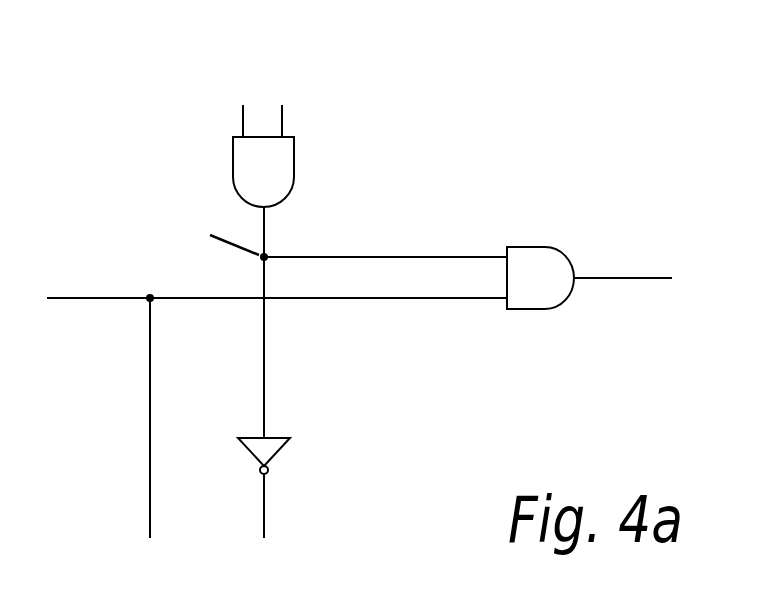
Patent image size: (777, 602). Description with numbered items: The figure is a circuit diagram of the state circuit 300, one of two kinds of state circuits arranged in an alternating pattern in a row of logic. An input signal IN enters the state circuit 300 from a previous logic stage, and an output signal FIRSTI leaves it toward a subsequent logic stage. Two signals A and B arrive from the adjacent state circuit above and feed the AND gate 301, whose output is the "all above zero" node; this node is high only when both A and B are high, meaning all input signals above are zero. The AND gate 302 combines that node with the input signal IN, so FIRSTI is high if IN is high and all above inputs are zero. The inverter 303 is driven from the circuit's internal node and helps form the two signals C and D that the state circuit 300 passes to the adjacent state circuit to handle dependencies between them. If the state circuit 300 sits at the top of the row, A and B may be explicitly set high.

The state circuit 300 is at (367, 289).
The AND gate 301 is at (243, 172).
The AND gate 302 is at (524, 301).
The inverter 303 is at (273, 449).